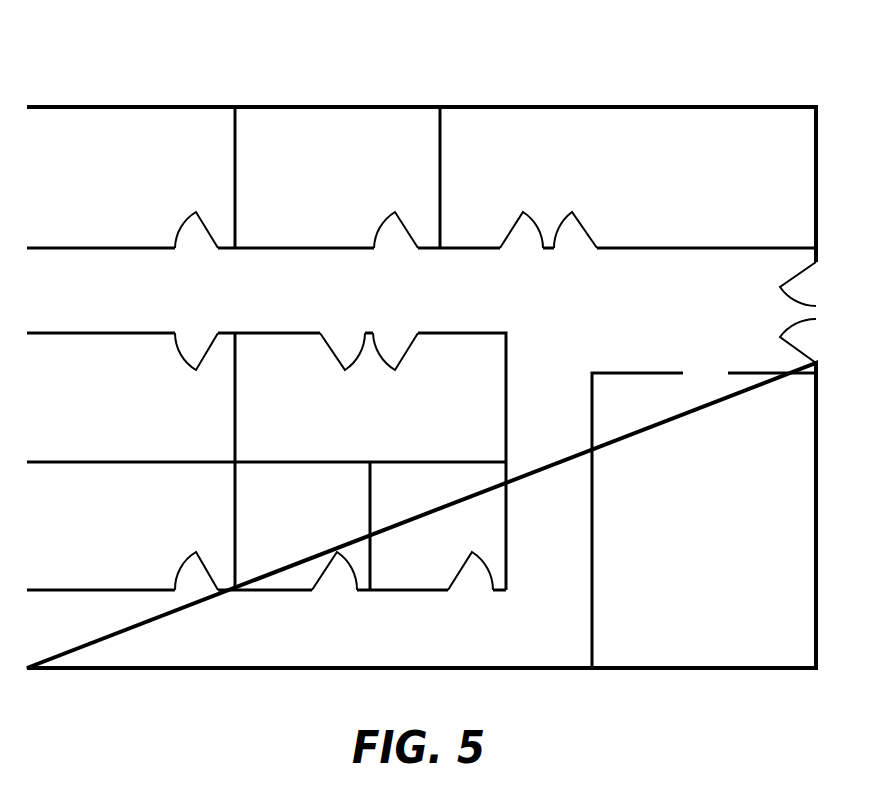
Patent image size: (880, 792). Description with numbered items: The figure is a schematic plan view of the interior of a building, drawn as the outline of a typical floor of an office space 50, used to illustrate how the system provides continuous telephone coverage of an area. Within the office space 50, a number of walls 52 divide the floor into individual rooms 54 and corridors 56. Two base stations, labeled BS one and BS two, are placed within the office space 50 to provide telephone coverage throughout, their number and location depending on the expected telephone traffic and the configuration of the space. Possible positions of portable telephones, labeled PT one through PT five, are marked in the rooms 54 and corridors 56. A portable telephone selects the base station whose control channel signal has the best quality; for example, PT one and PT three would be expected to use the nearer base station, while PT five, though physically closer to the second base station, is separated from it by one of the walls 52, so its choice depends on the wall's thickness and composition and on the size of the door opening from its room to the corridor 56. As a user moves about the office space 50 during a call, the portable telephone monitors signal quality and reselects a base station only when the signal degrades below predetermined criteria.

The office space 50 is at (421, 341).
The walls 52 is at (236, 181).
The rooms 54 is at (384, 427).
The corridors 56 is at (564, 419).